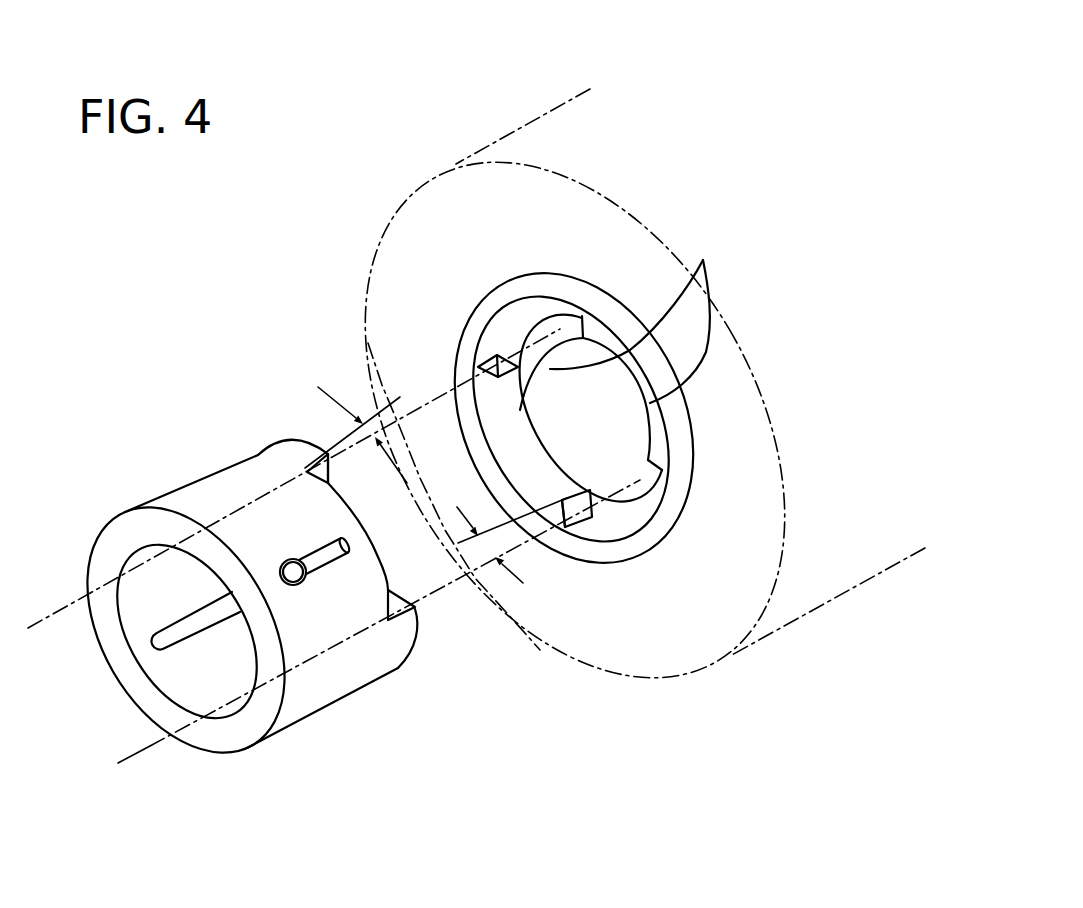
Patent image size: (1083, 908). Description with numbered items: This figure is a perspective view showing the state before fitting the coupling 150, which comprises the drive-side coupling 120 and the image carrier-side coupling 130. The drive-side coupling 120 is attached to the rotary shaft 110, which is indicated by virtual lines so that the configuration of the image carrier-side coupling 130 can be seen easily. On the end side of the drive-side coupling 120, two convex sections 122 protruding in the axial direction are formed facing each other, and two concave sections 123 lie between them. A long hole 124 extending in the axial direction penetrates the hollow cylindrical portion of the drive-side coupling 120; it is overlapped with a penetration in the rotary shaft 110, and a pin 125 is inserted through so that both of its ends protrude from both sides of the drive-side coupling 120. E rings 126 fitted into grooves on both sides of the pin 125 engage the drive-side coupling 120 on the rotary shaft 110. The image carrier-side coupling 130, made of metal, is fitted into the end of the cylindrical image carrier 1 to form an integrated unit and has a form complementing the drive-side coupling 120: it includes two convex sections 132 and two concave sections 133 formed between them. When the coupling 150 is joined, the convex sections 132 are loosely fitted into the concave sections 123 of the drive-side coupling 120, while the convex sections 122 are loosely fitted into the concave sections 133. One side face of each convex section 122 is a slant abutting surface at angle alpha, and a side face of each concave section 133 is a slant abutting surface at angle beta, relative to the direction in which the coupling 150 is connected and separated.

The cylindrical image carrier 1 is at (850, 592).
The rotary shaft 110 is at (150, 746).
The drive-side coupling 120 is at (187, 468).
The convex sections 122 is at (275, 448).
The concave sections 123 is at (405, 570).
The long hole 124 is at (318, 556).
The pin 125 is at (297, 586).
The E rings 126 is at (300, 566).
The image carrier-side coupling 130 is at (440, 318).
The convex sections 132 is at (703, 262).
The concave sections 133 is at (530, 313).
The coupling 150 is at (165, 270).